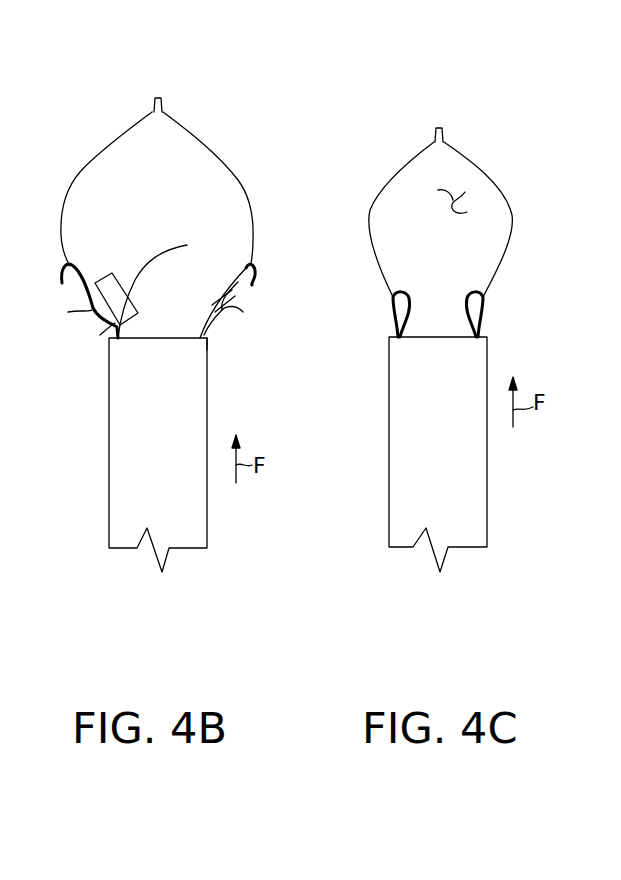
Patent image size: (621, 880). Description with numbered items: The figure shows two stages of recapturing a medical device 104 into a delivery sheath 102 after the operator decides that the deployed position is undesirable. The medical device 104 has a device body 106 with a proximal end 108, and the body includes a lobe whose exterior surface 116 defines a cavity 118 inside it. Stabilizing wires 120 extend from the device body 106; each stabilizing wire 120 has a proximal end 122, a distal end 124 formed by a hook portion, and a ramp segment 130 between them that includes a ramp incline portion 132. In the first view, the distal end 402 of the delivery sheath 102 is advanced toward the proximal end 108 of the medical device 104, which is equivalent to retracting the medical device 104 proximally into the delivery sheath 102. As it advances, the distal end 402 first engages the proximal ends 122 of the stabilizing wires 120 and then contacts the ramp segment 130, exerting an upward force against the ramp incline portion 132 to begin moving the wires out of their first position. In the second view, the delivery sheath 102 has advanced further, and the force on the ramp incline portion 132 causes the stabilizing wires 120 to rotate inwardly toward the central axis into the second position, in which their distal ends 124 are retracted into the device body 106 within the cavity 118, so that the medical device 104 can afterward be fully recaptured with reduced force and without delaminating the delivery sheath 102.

In FIG. 4B, the delivery sheath 102 is at (109, 468).
In FIG. 4C, the delivery sheath 102 is at (389, 443).
In FIG. 4B, the medical device 104 is at (193, 122).
In FIG. 4C, the medical device 104 is at (413, 128).
In FIG. 4C, the device body 106 is at (398, 171).
In FIG. 4B, the proximal end 108 is at (243, 312).
In FIG. 4C, the exterior surface 116 is at (513, 228).
In FIG. 4C, the cavity 118 is at (465, 192).
In FIG. 4B, the stabilizing wire 120 is at (82, 262).
In FIG. 4C, the stabilizing wire 120 is at (394, 321).
In FIG. 4B, the proximal end 122 is at (100, 335).
In FIG. 4C, the distal end 124 is at (405, 294).
In FIG. 4B, the ramp segment 130 is at (187, 245).
In FIG. 4B, the ramp incline portion 132 is at (68, 312).
In FIG. 4B, the distal end 402 is at (209, 346).